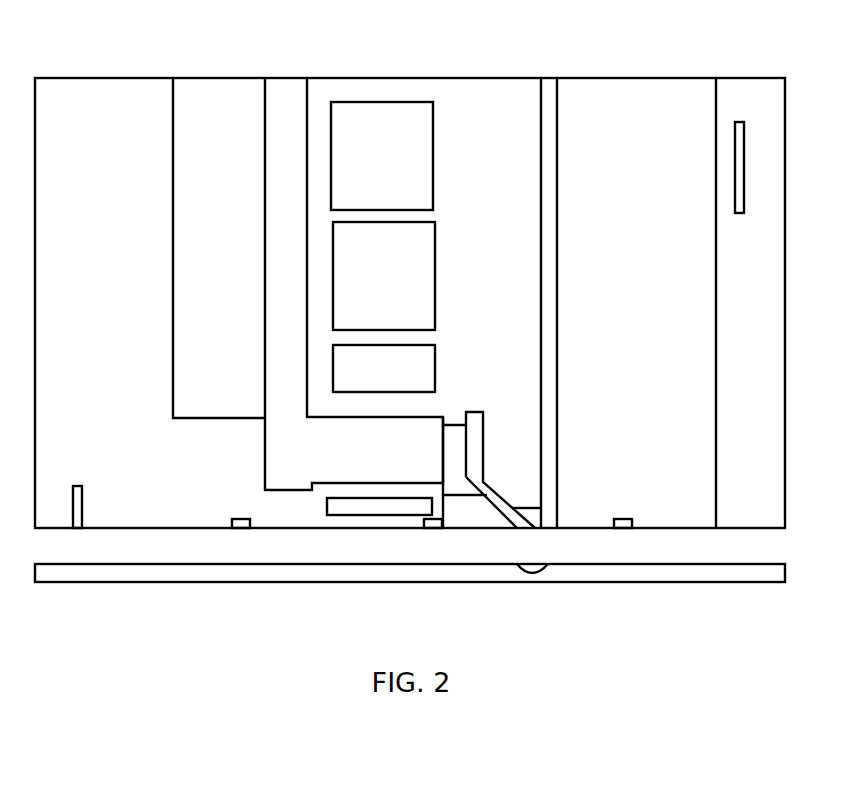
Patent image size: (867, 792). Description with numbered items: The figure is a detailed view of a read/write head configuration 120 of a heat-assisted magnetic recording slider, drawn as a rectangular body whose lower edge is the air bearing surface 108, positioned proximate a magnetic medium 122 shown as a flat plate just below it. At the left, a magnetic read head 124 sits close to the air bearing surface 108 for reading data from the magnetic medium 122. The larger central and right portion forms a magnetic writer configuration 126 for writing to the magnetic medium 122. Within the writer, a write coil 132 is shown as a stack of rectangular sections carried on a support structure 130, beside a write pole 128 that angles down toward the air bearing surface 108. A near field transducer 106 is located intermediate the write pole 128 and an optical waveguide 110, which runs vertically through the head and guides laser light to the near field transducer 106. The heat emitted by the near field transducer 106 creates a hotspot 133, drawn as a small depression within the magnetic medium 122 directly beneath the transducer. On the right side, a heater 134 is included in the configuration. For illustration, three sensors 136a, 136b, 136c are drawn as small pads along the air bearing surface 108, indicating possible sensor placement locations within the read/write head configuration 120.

The read/write head configuration 120 is at (579, 64).
The magnetic writer configuration 126 is at (150, 192).
The support structure 130 is at (268, 427).
The write coil 132 is at (428, 273).
The write pole 128 is at (476, 418).
The near field transducer 106 is at (532, 504).
The optical waveguide 110 is at (558, 420).
The air bearing surface 108 is at (700, 528).
The heater 134 is at (740, 213).
The magnetic read head 124 is at (82, 496).
The sensor 136a is at (235, 518).
The sensor 136b is at (427, 517).
The sensor 136c is at (626, 516).
The magnetic medium 122 is at (142, 582).
The hotspot 133 is at (540, 573).